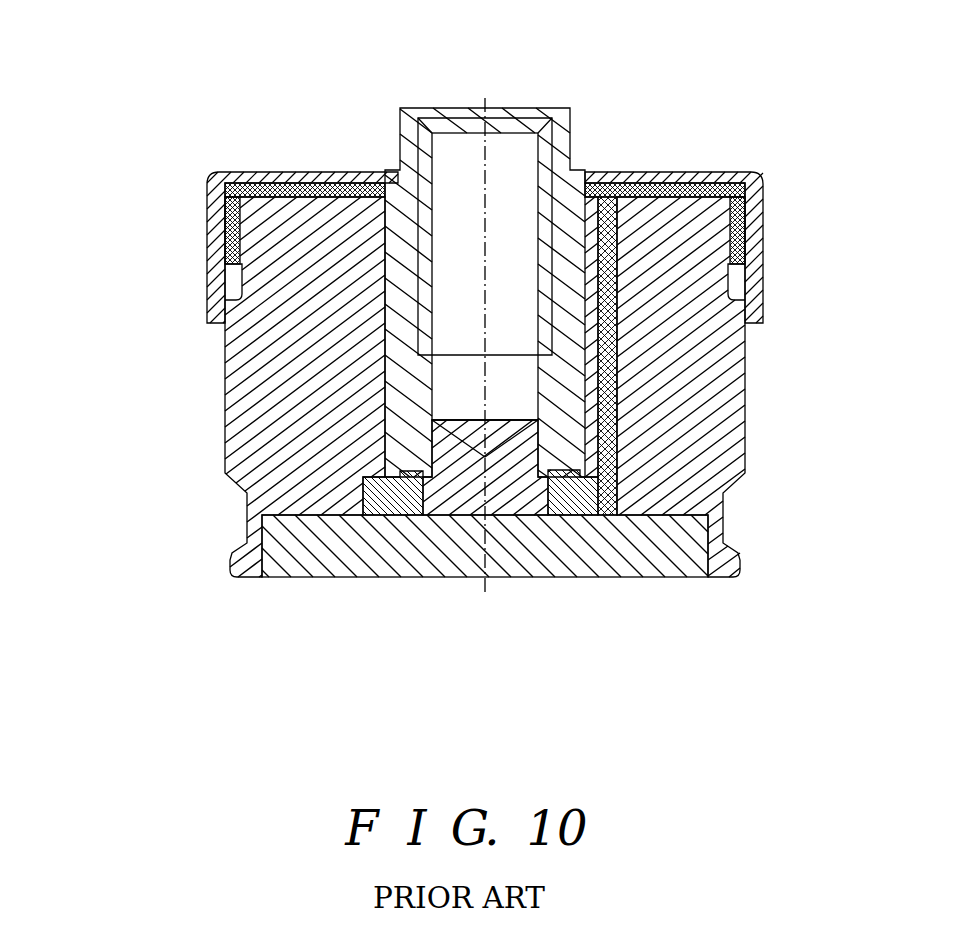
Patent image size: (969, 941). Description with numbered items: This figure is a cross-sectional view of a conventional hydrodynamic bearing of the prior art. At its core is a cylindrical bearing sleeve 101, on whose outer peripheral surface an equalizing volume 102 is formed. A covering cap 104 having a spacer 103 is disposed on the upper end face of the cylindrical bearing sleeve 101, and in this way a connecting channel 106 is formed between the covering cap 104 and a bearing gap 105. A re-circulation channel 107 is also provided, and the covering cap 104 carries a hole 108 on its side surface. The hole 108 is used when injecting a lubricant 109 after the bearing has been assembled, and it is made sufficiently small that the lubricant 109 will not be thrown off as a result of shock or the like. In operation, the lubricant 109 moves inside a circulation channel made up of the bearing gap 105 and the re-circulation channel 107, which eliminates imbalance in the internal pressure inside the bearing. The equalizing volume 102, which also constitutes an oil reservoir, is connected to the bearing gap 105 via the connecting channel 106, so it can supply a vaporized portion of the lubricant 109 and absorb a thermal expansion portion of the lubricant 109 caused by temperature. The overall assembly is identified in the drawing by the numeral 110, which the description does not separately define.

The cylindrical bearing sleeve 101 is at (715, 355).
The equalizing volume 102 is at (232, 282).
The spacer 103 is at (623, 170).
The covering cap 104 is at (744, 172).
The bearing gap 105 is at (385, 343).
The connecting channel 106 is at (222, 185).
The re-circulation channel 107 is at (622, 442).
The hole 108 is at (733, 282).
The lubricant 109 is at (350, 175).
The central tube / housing 110 is at (503, 106).